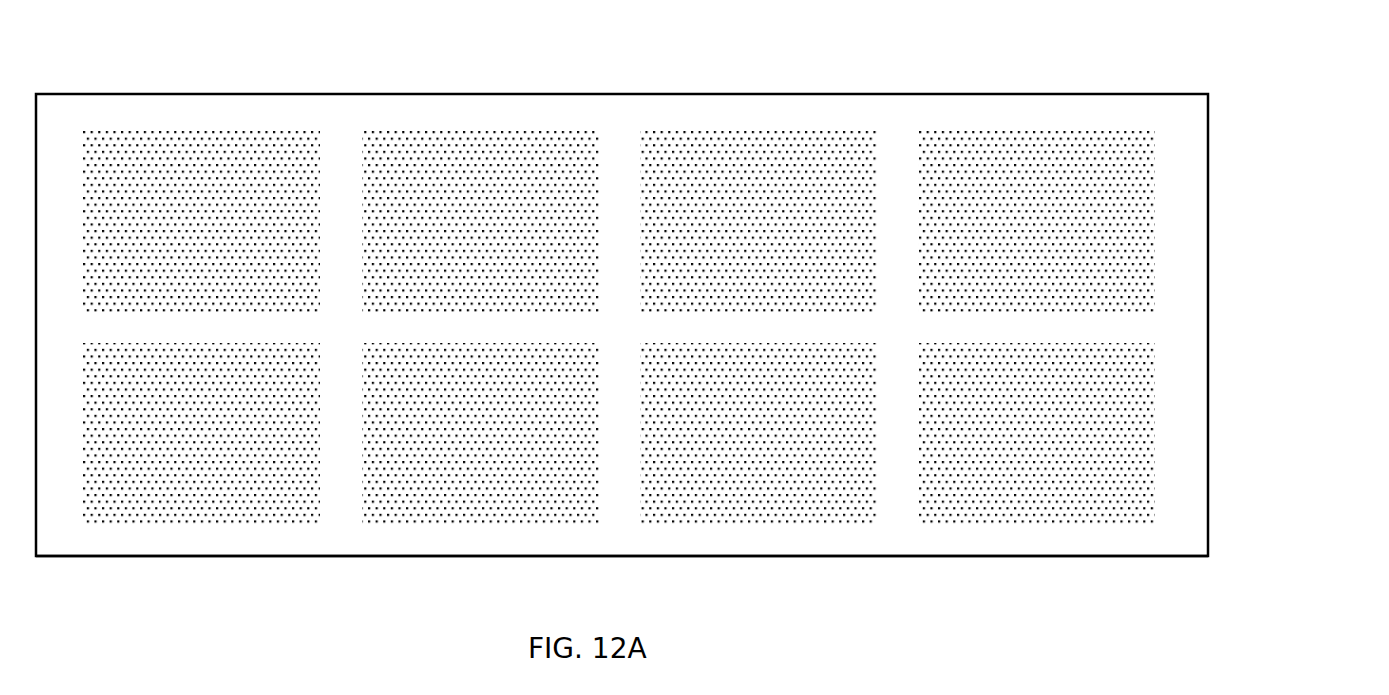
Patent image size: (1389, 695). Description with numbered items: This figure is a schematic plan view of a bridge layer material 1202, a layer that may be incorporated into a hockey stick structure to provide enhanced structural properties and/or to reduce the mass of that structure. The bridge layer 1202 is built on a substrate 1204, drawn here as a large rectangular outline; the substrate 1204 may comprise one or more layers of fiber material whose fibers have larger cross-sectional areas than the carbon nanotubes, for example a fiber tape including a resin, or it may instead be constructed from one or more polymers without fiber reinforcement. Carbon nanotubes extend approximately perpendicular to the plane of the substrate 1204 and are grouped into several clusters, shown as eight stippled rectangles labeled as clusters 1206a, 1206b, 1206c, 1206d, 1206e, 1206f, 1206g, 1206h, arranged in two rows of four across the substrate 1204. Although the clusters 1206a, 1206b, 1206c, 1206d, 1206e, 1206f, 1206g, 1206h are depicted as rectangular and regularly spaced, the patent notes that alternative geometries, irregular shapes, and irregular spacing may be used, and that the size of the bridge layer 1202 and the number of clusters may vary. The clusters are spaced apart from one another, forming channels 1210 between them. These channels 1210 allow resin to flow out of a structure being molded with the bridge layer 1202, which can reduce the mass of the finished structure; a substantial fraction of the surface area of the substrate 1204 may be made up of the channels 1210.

The bridge layer material 1202 is at (1290, 100).
The substrate 1204 is at (1163, 540).
The channels 1210 is at (977, 328).
The cluster of carbon nanotubes 1206a is at (192, 173).
The cluster of carbon nanotubes 1206b is at (440, 175).
The cluster of carbon nanotubes 1206c is at (720, 175).
The cluster of carbon nanotubes 1206d is at (998, 175).
The cluster of carbon nanotubes 1206e is at (150, 470).
The cluster of carbon nanotubes 1206f is at (422, 470).
The cluster of carbon nanotubes 1206g is at (718, 477).
The cluster of carbon nanotubes 1206h is at (995, 478).